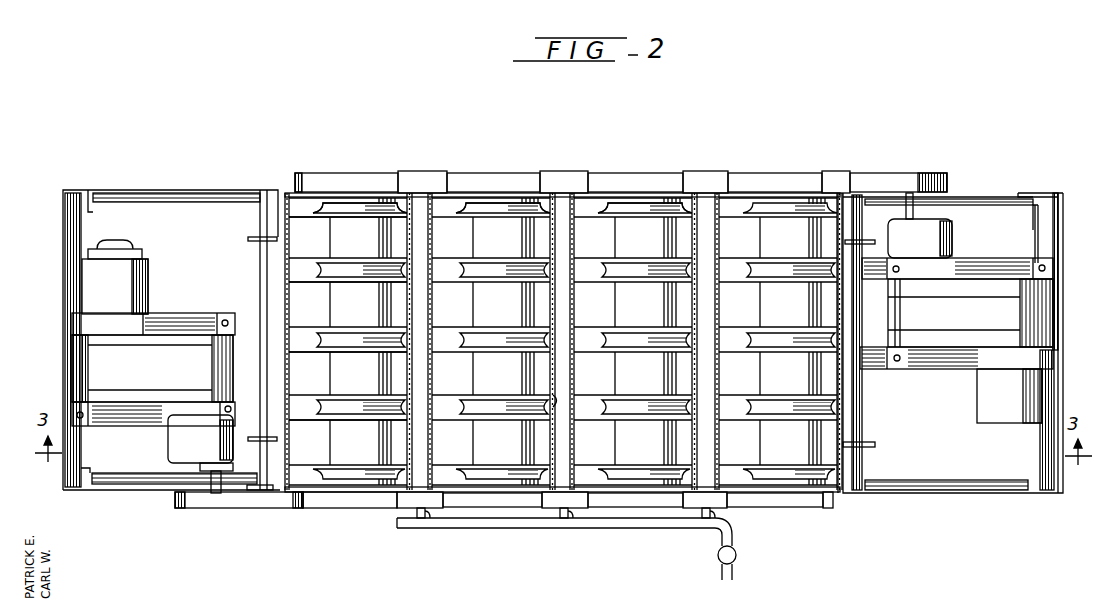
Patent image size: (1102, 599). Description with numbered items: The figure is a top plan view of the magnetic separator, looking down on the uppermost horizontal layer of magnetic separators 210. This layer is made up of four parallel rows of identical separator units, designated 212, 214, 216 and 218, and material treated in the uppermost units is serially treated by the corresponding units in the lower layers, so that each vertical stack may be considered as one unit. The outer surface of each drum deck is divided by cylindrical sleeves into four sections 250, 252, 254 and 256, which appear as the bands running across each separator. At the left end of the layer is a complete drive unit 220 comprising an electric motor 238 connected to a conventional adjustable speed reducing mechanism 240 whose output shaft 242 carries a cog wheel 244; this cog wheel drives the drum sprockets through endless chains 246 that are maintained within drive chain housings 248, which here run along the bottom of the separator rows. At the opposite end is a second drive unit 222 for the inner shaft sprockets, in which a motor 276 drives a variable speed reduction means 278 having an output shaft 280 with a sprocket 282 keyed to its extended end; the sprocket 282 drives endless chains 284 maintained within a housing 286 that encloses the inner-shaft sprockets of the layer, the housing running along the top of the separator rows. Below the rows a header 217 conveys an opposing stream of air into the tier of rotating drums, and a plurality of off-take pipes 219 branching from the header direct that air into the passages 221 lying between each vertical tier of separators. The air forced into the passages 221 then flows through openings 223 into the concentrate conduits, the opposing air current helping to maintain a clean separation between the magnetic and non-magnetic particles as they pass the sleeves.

The magnetic separators 210 is at (353, 211).
The magnetic separator row 212 is at (362, 486).
The magnetic separator row 214 is at (498, 487).
The magnetic separator row 216 is at (640, 487).
The header 217 is at (670, 530).
The magnetic separator row 218 is at (782, 487).
The off-take pipes 219 is at (425, 518).
The drive unit 220 is at (74, 292).
The passages 221 is at (422, 200).
The drive unit 222 is at (1053, 312).
The openings 223 is at (564, 404).
The electric motor 238 is at (148, 275).
The adjustable speed reducing mechanism 240 is at (200, 312).
The output shaft 242 is at (215, 495).
The cog wheel 244 is at (232, 508).
The endless chains 246 is at (298, 508).
The drive chain housings 248 is at (469, 508).
The drum deck section 250 is at (328, 447).
The drum deck section 252 is at (330, 380).
The drum deck section 254 is at (329, 300).
The drum deck section 256 is at (329, 238).
The motor 276 is at (982, 405).
The variable speed reduction means 278 is at (927, 330).
The output shaft 280 is at (920, 212).
The sprocket 282 is at (895, 183).
The endless chains 284 is at (802, 181).
The housing 286 is at (606, 183).